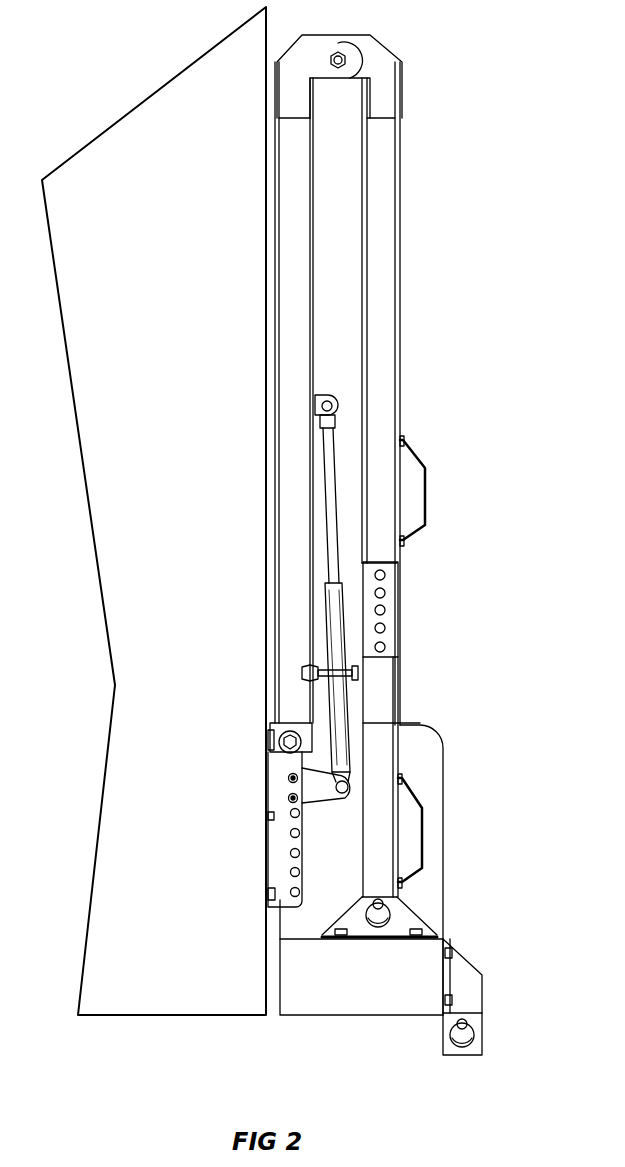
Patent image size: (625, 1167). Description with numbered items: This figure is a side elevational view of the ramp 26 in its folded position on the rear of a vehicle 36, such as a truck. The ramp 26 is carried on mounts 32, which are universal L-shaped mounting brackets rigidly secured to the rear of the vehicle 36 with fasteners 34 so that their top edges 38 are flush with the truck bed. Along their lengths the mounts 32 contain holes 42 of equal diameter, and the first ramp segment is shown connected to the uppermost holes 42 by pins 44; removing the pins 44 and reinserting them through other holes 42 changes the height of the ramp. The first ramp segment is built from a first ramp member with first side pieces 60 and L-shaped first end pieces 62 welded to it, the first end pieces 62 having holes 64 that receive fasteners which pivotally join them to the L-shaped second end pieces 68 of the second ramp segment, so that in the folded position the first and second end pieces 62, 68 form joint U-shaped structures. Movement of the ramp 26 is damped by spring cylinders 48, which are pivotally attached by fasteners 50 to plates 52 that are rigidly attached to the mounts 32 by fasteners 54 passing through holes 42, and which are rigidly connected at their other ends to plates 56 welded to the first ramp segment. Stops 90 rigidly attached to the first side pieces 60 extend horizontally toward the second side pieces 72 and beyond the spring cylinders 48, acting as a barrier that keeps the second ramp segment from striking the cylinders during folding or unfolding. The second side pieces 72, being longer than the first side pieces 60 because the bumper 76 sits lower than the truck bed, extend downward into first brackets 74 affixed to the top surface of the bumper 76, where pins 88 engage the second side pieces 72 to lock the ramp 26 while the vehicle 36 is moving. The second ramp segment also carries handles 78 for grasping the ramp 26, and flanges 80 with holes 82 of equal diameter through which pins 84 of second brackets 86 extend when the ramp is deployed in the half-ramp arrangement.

The ramp 26 is at (405, 235).
The mounts 32 is at (274, 816).
The fasteners 34 is at (268, 740).
The vehicle 36 is at (195, 423).
The top edges 38 is at (272, 722).
The holes 42 is at (300, 868).
The pins 44 is at (292, 732).
The spring cylinders 48 is at (330, 440).
The fasteners 50 is at (348, 785).
The plates 52 is at (312, 800).
The fasteners 54 is at (288, 798).
The plates 56 is at (322, 400).
The first side pieces 60 is at (290, 255).
The first end pieces 62 is at (305, 50).
The holes 64 is at (345, 58).
The second end pieces 68 is at (385, 60).
The second side pieces 72 is at (388, 355).
The first brackets 74 is at (390, 940).
The bumper 76 is at (380, 989).
The handles 78 is at (420, 468).
The flanges 80 is at (385, 575).
The holes 82 is at (385, 610).
The pins 84 is at (470, 1028).
The second brackets 86 is at (462, 975).
The pins 88 is at (385, 905).
The stops 90 is at (320, 670).